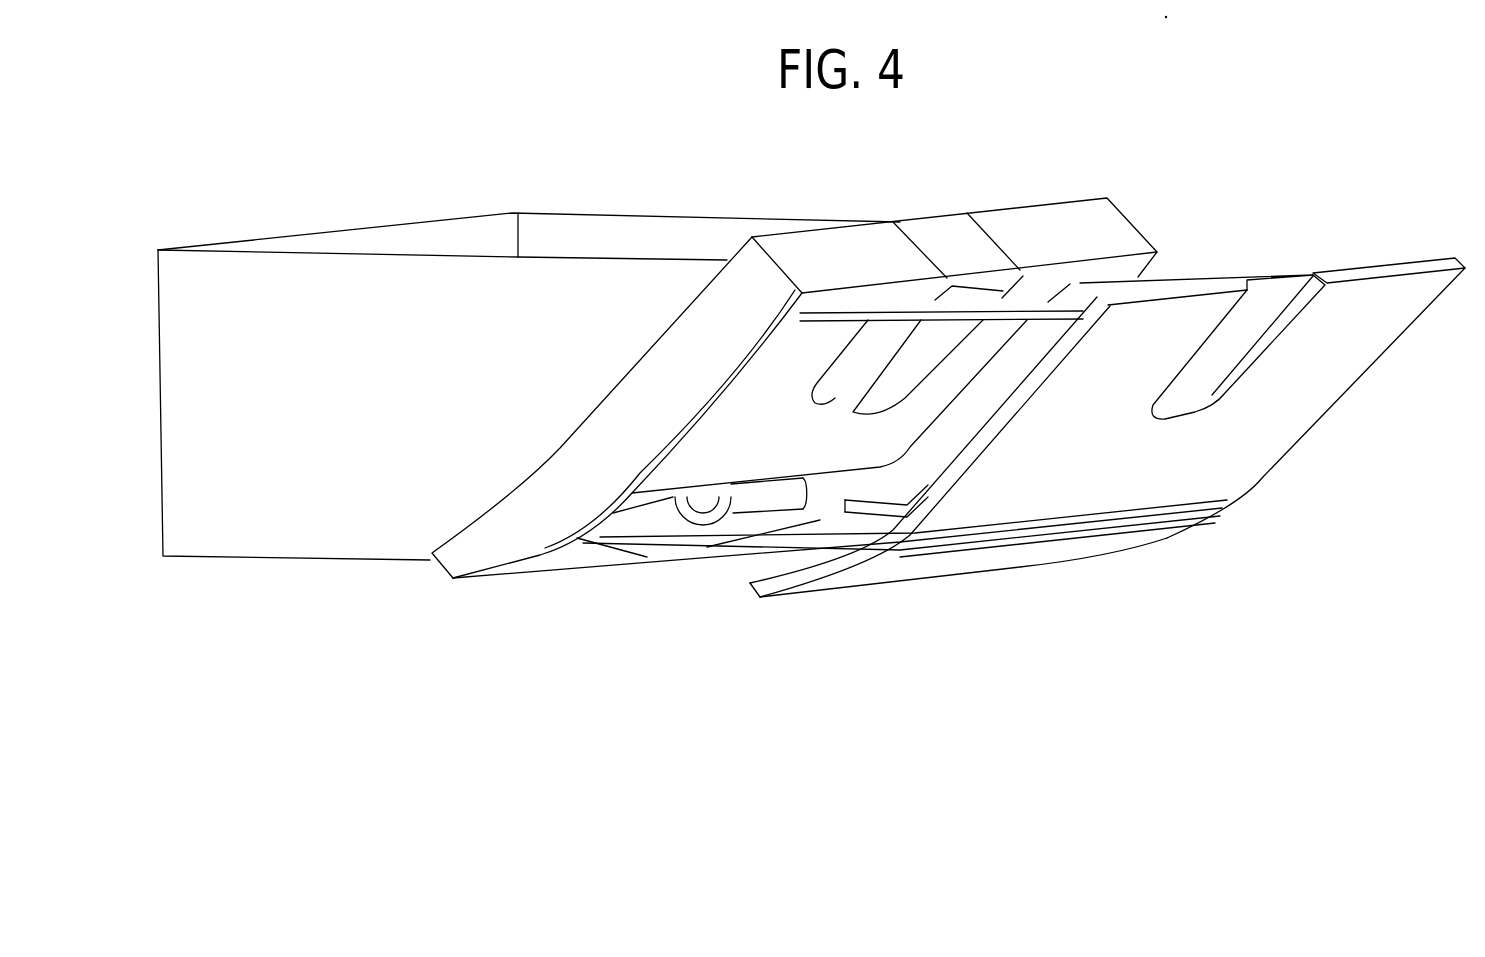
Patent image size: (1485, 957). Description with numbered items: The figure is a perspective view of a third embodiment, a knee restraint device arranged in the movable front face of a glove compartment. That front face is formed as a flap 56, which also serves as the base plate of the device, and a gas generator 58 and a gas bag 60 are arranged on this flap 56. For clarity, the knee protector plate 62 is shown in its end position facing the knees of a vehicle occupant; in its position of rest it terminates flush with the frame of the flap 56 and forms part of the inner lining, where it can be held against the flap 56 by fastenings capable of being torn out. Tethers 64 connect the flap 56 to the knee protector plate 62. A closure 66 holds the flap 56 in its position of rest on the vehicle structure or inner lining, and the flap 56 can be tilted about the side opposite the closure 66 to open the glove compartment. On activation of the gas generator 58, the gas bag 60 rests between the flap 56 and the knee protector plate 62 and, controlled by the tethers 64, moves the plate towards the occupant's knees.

The flap 56 is at (492, 545).
The gas generator 58 is at (733, 525).
The gas bag 60 is at (803, 342).
The knee protector plate 62 is at (1350, 372).
The tethers 64 is at (1205, 282).
The closure 66 is at (958, 245).